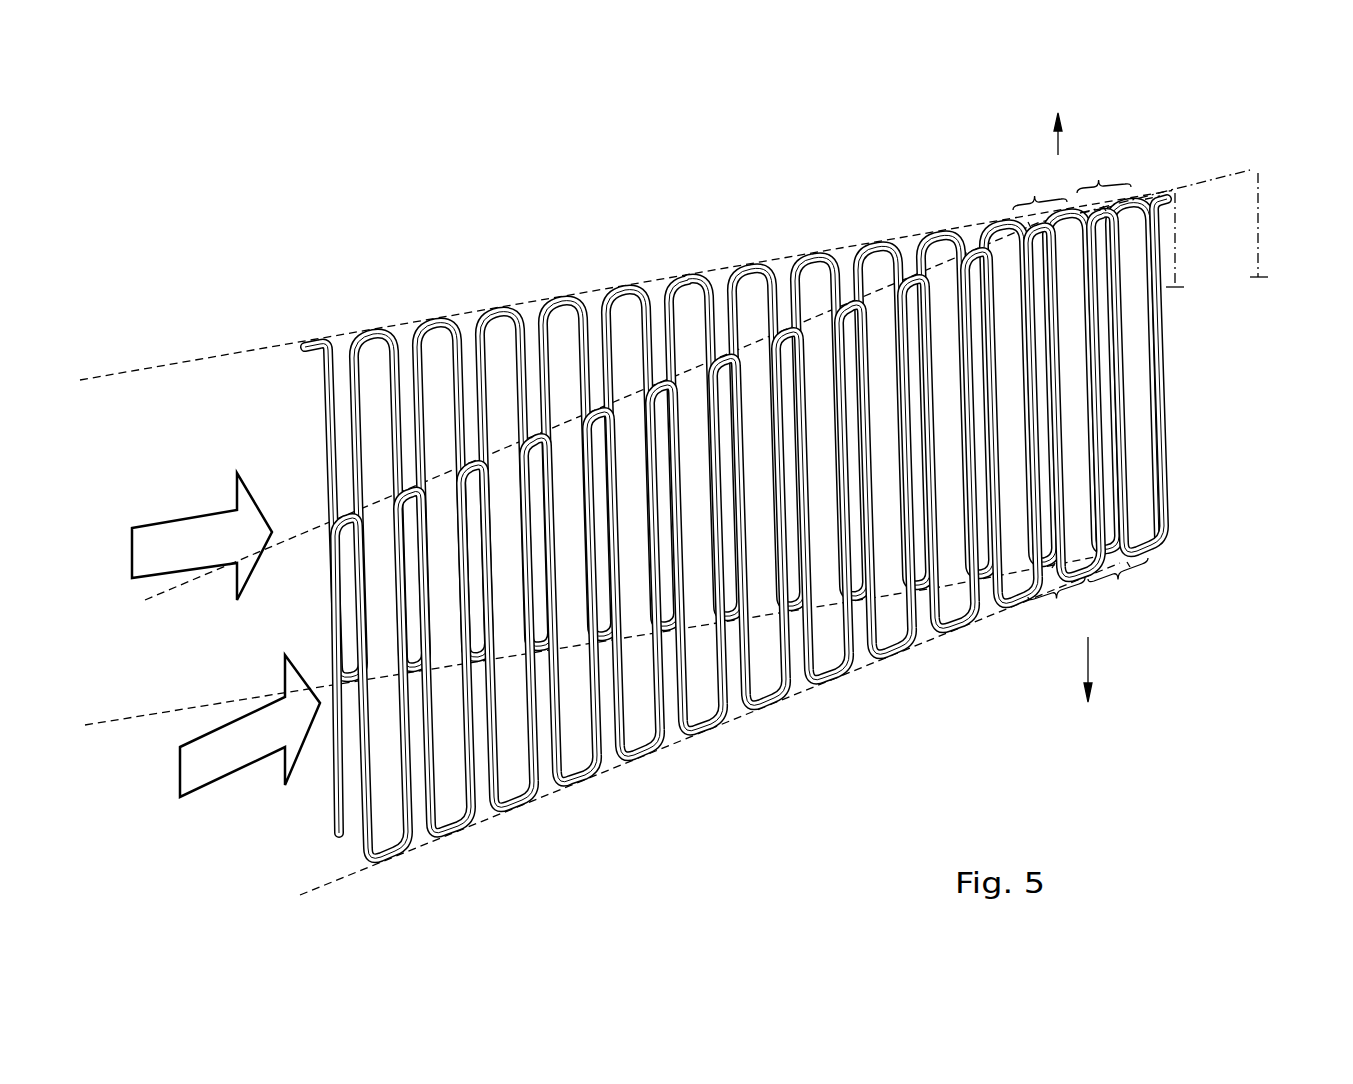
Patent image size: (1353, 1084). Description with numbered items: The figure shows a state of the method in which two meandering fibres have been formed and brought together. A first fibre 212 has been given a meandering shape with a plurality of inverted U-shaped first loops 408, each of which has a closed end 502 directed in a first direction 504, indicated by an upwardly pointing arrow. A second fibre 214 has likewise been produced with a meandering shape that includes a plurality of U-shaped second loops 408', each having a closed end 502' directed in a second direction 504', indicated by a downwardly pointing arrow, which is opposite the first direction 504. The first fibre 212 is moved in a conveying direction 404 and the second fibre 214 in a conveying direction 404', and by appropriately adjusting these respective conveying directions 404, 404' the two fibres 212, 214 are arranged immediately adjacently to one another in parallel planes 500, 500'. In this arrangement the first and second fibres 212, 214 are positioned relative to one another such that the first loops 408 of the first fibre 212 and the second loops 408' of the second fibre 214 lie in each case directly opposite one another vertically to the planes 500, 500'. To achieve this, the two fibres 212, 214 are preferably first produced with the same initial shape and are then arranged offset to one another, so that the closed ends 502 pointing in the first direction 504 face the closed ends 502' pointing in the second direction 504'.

The first fibre 212 is at (518, 802).
The second fibre 214 is at (368, 333).
The conveying direction 404 is at (250, 743).
The conveying direction 404' is at (202, 534).
The first loops 408 is at (1069, 181).
The second loops 408' is at (1090, 598).
The plane 500 is at (1288, 225).
The plane 500' is at (1165, 205).
The closed end 502 is at (1051, 172).
The closed end 502' is at (1105, 620).
The first direction 504 is at (1023, 134).
The second direction 504' is at (1127, 669).